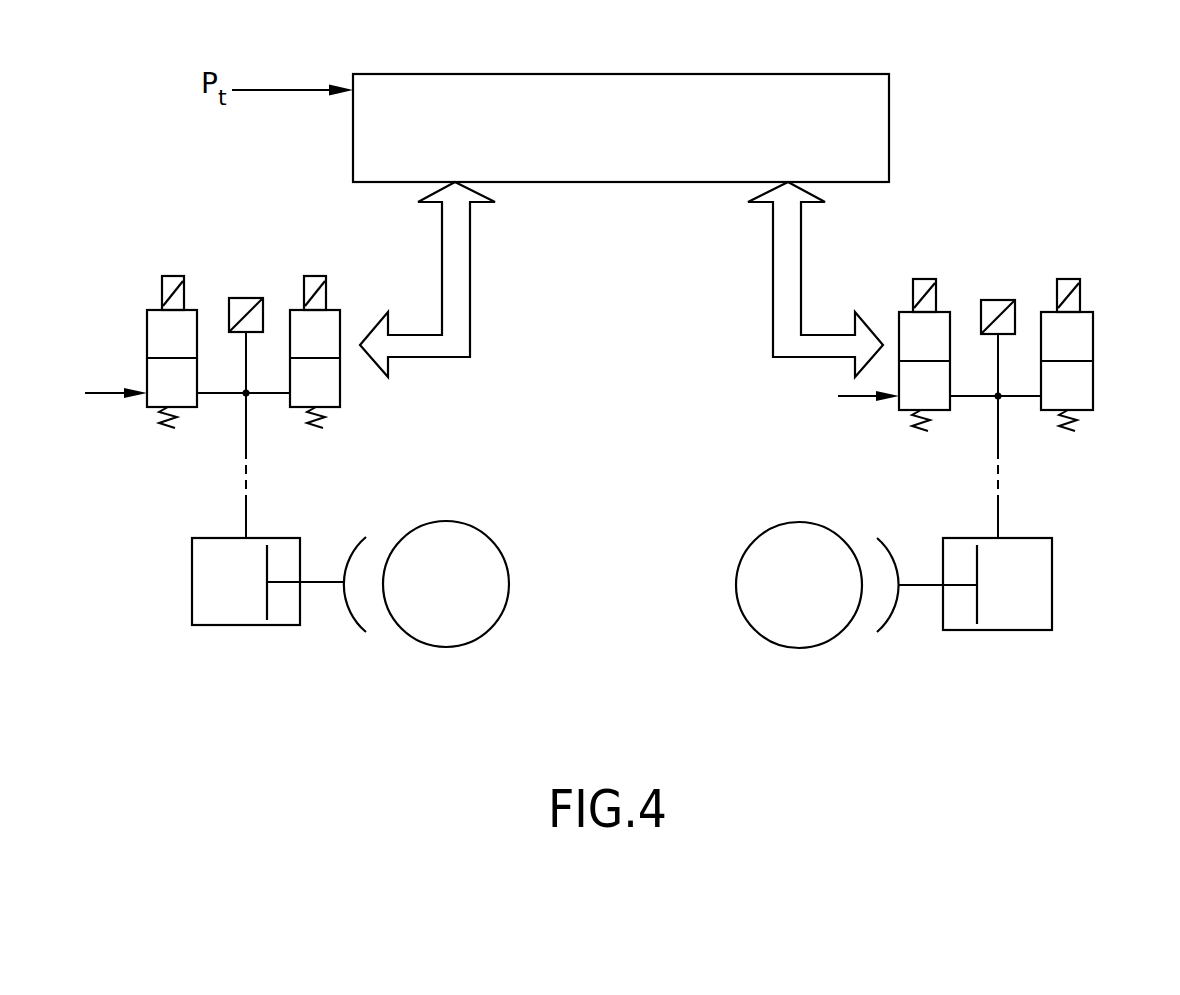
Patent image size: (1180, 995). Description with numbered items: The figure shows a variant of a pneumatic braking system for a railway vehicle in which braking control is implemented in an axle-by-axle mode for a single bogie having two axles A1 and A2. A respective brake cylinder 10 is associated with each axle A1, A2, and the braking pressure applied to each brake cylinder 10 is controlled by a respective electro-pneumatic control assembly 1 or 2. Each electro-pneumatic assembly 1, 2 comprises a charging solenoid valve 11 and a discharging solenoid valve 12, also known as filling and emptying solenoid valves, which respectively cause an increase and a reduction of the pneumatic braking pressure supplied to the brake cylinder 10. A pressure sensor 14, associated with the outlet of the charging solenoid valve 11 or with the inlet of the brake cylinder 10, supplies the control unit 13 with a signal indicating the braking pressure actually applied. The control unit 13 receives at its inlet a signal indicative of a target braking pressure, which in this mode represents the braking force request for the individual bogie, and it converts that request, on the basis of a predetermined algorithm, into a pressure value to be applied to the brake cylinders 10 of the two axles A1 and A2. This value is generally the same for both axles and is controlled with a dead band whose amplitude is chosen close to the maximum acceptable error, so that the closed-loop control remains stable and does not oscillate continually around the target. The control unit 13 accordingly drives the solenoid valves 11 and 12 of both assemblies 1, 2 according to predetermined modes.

The electro-pneumatic control assembly 1 is at (216, 270).
The electro-pneumatic control assembly 2 is at (1024, 272).
The brake cylinder 10 is at (252, 625).
The charging solenoid valve 11 is at (147, 330).
The discharging solenoid valve 12 is at (341, 318).
The control unit 13 is at (889, 120).
The pressure sensor 14 is at (245, 298).
The axle A1 is at (440, 627).
The axle A2 is at (798, 628).